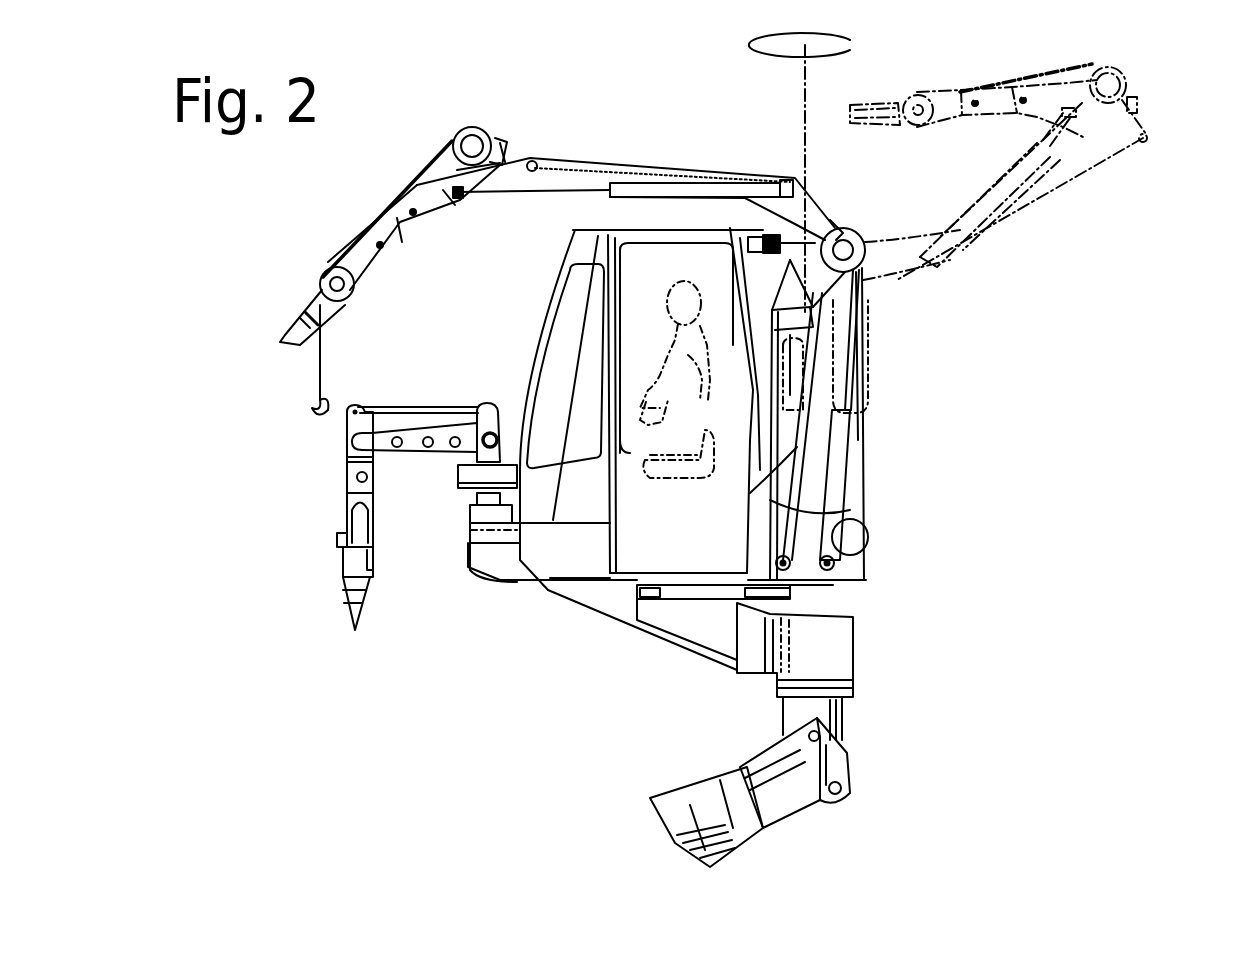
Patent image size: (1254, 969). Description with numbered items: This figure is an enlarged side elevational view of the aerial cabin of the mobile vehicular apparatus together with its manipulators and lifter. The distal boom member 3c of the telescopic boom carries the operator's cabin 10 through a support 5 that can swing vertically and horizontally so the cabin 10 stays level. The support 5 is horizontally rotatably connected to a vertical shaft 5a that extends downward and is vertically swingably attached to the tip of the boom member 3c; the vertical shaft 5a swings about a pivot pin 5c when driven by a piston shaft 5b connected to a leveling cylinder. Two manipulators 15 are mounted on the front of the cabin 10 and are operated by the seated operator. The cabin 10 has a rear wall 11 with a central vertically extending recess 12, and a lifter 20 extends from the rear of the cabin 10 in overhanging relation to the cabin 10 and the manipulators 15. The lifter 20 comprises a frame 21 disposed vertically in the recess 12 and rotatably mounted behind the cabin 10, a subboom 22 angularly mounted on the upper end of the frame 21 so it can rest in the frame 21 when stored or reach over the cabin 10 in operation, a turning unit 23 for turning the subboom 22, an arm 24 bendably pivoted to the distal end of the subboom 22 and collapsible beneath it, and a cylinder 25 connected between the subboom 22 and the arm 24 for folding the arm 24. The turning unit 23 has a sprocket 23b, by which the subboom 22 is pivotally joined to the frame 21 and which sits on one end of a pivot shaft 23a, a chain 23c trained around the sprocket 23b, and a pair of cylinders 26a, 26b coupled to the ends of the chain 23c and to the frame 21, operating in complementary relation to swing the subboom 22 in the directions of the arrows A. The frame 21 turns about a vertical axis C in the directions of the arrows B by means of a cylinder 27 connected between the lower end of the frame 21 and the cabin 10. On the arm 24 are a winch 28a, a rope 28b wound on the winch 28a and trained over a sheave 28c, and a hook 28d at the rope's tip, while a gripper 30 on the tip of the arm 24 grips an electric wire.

The boom member 3c is at (697, 780).
The support 5 is at (717, 643).
The vertical shaft 5a is at (837, 707).
The piston shaft 5b is at (817, 793).
The pivot pin 5c is at (847, 750).
The operator's cabin 10 is at (575, 507).
The rear wall 11 is at (877, 420).
The recess 12 is at (750, 513).
The manipulator 15 is at (337, 508).
The lifter 20 is at (700, 168).
The frame 21 is at (757, 453).
The subboom 22 is at (618, 160).
The turning unit 23 is at (880, 237).
The pivot shaft 23a is at (870, 262).
The sprocket 23b is at (860, 235).
The chain 23c is at (867, 313).
The arm 24 is at (400, 240).
The cylinder 25 is at (676, 170).
The cylinder 26a is at (863, 467).
The cylinder 26b is at (777, 490).
The cylinder 27 is at (683, 600).
The winch 28a is at (483, 108).
The rope 28b is at (418, 173).
The sheave 28c is at (323, 267).
The hook 28d is at (313, 395).
The gripper 30 is at (297, 300).
The arrows A is at (900, 200).
The arrows B is at (836, 52).
The vertical axis C is at (803, 90).